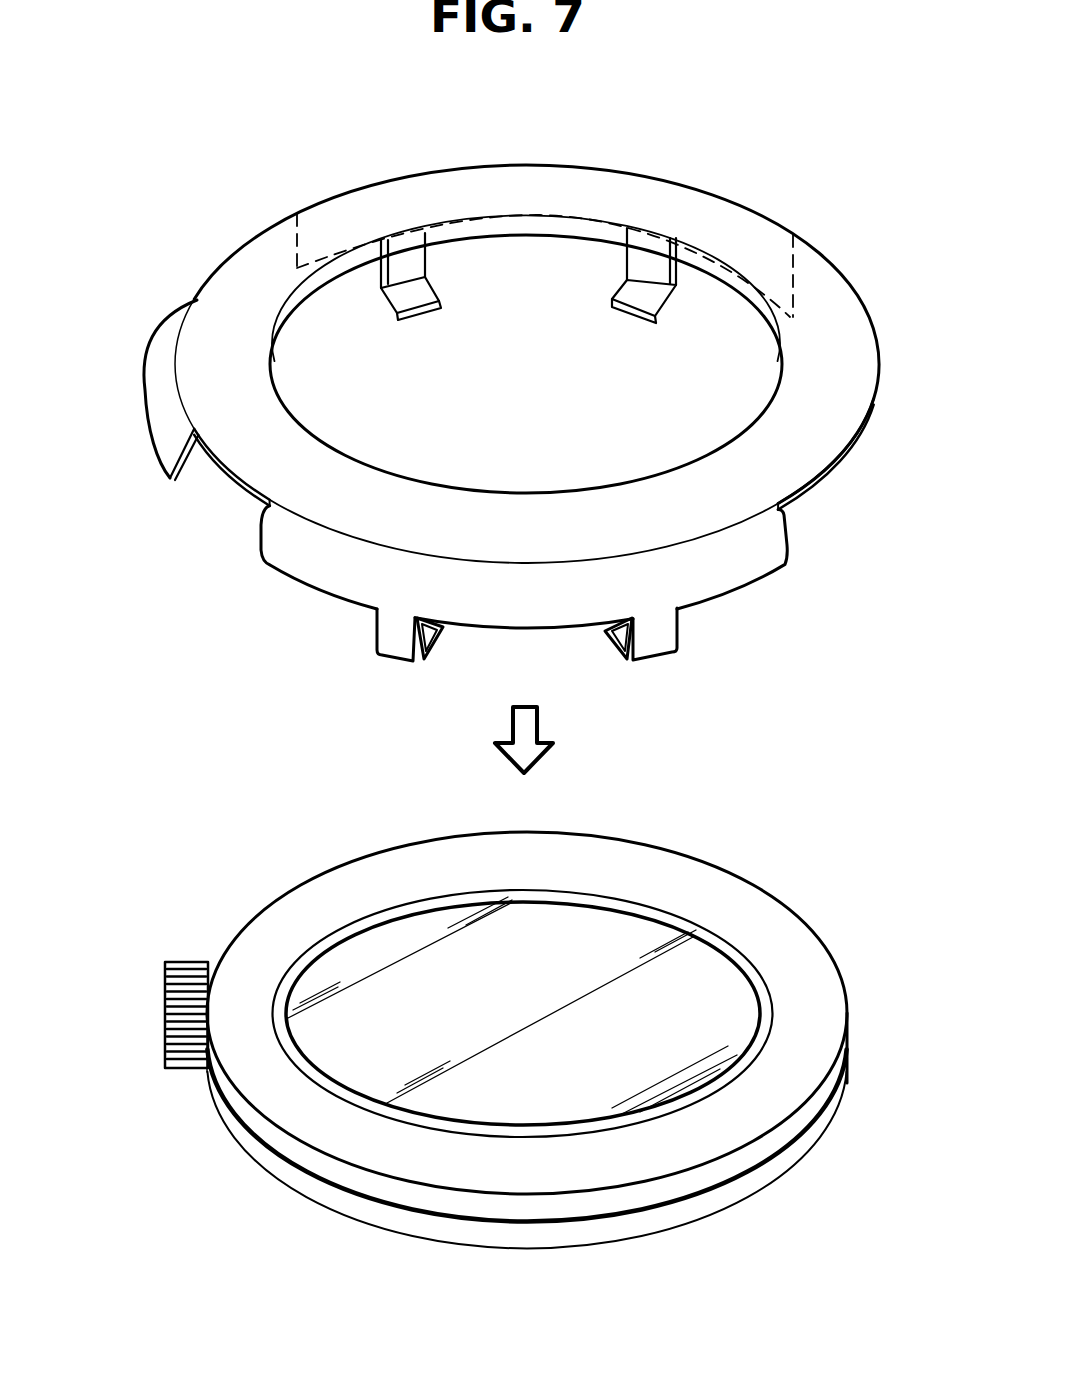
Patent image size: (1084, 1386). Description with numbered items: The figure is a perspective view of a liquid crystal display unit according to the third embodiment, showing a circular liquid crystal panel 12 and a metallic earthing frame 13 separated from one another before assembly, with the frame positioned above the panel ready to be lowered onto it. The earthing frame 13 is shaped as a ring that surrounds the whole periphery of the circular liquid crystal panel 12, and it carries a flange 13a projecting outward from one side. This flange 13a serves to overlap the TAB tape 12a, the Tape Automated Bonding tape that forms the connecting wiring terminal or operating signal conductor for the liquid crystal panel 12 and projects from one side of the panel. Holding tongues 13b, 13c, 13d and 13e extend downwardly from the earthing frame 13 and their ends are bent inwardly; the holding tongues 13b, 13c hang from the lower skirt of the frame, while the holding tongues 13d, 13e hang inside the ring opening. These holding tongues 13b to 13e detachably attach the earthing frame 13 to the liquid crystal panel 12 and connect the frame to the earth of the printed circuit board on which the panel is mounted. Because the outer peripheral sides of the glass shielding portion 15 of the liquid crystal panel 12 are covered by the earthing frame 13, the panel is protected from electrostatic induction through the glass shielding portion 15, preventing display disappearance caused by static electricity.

The liquid crystal panel 12 is at (783, 947).
The TAB tape 12a is at (188, 965).
The earthing frame 13 is at (763, 224).
The flange 13a is at (160, 332).
The holding tongue 13b is at (387, 625).
The holding tongue 13c is at (658, 627).
The holding tongue 13d is at (418, 300).
The holding tongue 13e is at (637, 298).
The glass shielding portion 15 is at (690, 1200).